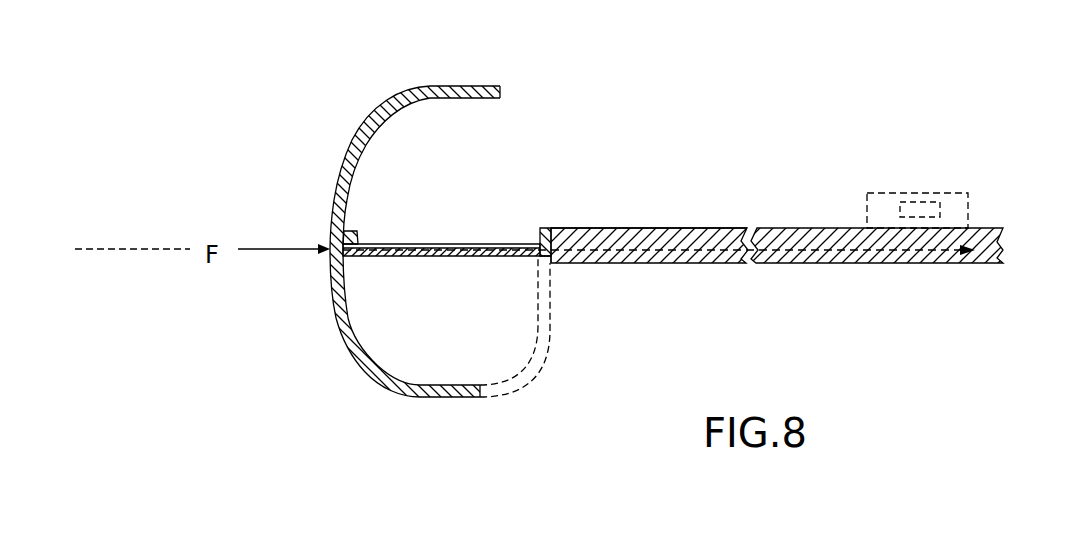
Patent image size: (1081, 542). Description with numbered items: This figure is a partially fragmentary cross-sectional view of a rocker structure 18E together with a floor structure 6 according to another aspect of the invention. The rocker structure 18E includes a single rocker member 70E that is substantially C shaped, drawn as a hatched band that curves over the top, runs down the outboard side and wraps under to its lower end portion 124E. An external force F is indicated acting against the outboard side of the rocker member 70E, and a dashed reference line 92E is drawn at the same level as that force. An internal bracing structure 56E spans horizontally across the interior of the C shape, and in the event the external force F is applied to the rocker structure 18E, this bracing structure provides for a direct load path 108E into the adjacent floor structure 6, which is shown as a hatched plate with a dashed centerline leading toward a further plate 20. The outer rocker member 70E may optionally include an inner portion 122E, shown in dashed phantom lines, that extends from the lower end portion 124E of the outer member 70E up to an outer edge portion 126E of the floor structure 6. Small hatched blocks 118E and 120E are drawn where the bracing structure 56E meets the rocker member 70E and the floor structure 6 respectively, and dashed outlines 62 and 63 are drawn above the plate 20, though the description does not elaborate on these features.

The rocker structure 18E is at (386, 102).
The single rocker member 70E is at (345, 168).
The reference line 92E is at (176, 249).
The retaining protrusion 118E is at (357, 231).
The internal bracing structure 56E is at (437, 244).
The stop block 120E is at (537, 228).
The inner portion 122E is at (535, 355).
The lower end portion 124E is at (470, 397).
The outer edge portion 126E is at (550, 266).
The direct load path 108E is at (703, 228).
The floor structure 6 is at (682, 263).
The second plate 20 is at (818, 263).
The connector housing 62 is at (925, 193).
The connector element 63 is at (945, 205).